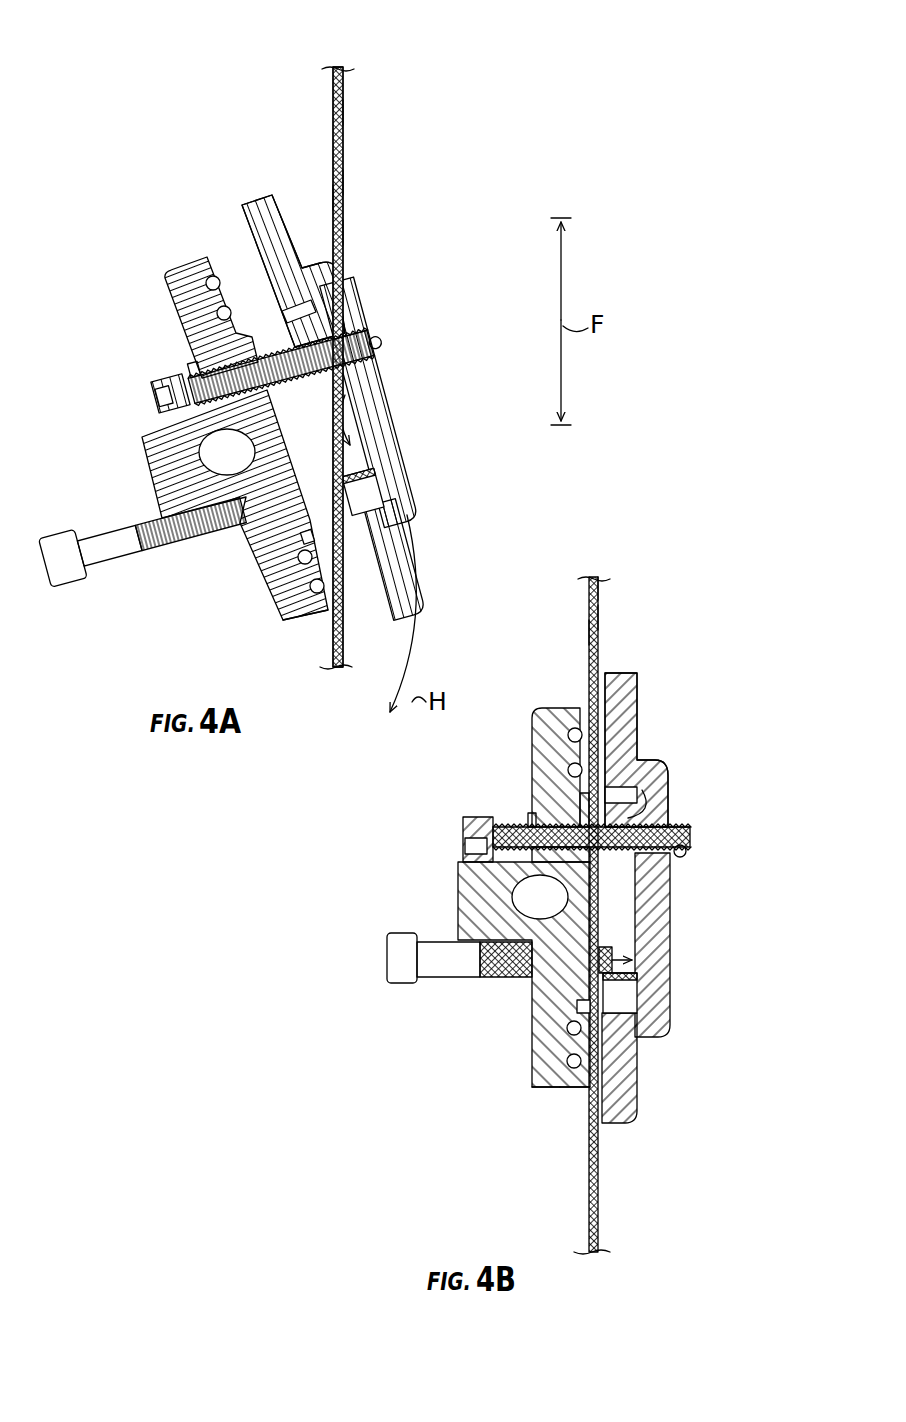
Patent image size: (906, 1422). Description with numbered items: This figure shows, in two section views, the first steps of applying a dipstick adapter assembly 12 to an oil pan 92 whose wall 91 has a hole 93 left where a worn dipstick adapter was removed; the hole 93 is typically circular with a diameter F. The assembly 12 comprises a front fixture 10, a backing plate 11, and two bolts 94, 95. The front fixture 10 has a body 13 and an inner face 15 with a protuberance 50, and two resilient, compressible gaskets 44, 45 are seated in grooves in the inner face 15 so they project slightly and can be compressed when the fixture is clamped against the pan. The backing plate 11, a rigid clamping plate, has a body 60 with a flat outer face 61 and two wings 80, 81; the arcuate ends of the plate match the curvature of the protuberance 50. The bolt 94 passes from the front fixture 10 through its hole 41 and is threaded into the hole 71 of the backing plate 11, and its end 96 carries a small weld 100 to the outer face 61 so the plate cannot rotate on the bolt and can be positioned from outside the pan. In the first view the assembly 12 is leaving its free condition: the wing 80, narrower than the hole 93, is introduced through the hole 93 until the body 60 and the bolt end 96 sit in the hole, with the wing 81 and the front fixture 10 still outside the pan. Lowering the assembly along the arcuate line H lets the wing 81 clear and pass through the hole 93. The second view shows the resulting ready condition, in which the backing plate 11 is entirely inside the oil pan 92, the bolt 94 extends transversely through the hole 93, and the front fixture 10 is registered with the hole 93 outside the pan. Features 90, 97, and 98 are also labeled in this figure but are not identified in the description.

In FIG. 4A, the front fixture 10 is at (160, 282).
In FIG. 4B, the front fixture 10 is at (542, 712).
In FIG. 4A, the backing plate 11 is at (249, 192).
In FIG. 4B, the backing plate 11 is at (640, 688).
In FIG. 4A, the dipstick adapter assembly 12 is at (492, 211).
In FIG. 4B, the dipstick adapter assembly 12 is at (768, 746).
In FIG. 4A, the body 13 is at (292, 607).
In FIG. 4B, the body 13 is at (540, 1090).
In FIG. 4A, the inner face 15 is at (344, 600).
In FIG. 4B, the inner face 15 is at (581, 1090).
In FIG. 4A, the hole 41 is at (192, 372).
In FIG. 4B, the hole 41 is at (531, 813).
In FIG. 4A, the gasket 44 is at (229, 312).
In FIG. 4B, the gasket 44 is at (581, 1030).
In FIG. 4A, the gasket 45 is at (214, 277).
In FIG. 4B, the gasket 45 is at (581, 1063).
In FIG. 4A, the protuberance 50 is at (278, 560).
In FIG. 4B, the protuberance 50 is at (600, 908).
In FIG. 4A, the body 60 is at (407, 460).
In FIG. 4B, the body 60 is at (671, 1036).
In FIG. 4A, the outer face 61 is at (397, 413).
In FIG. 4B, the outer face 61 is at (672, 972).
In FIG. 4A, the hole 71 is at (358, 329).
In FIG. 4B, the hole 71 is at (670, 830).
In FIG. 4A, the wing 80 is at (419, 607).
In FIG. 4B, the wing 80 is at (636, 1122).
In FIG. 4A, the wing 81 is at (268, 195).
In FIG. 4B, the wing 81 is at (618, 676).
In FIG. 4A, the notch 90 is at (362, 404).
In FIG. 4B, the notch 90 is at (644, 812).
In FIG. 4A, the wall 91 is at (345, 118).
In FIG. 4B, the wall 91 is at (600, 590).
In FIG. 4A, the oil pan 92 is at (329, 90).
In FIG. 4B, the oil pan 92 is at (586, 596).
In FIG. 4A, the hole 93 is at (345, 235).
In FIG. 4A, the bolt 94 is at (154, 378).
In FIG. 4B, the bolt 94 is at (478, 817).
In FIG. 4A, the bolt 95 is at (72, 600).
In FIG. 4B, the bolt 95 is at (400, 985).
In FIG. 4A, the end 96 is at (366, 333).
In FIG. 4B, the end 96 is at (692, 838).
In FIG. 4A, the first panel face 97 is at (330, 195).
In FIG. 4B, the first panel face 97 is at (589, 628).
In FIG. 4A, the second panel face 98 is at (345, 183).
In FIG. 4B, the second panel face 98 is at (600, 618).
In FIG. 4A, the weld 100 is at (380, 347).
In FIG. 4B, the weld 100 is at (688, 852).